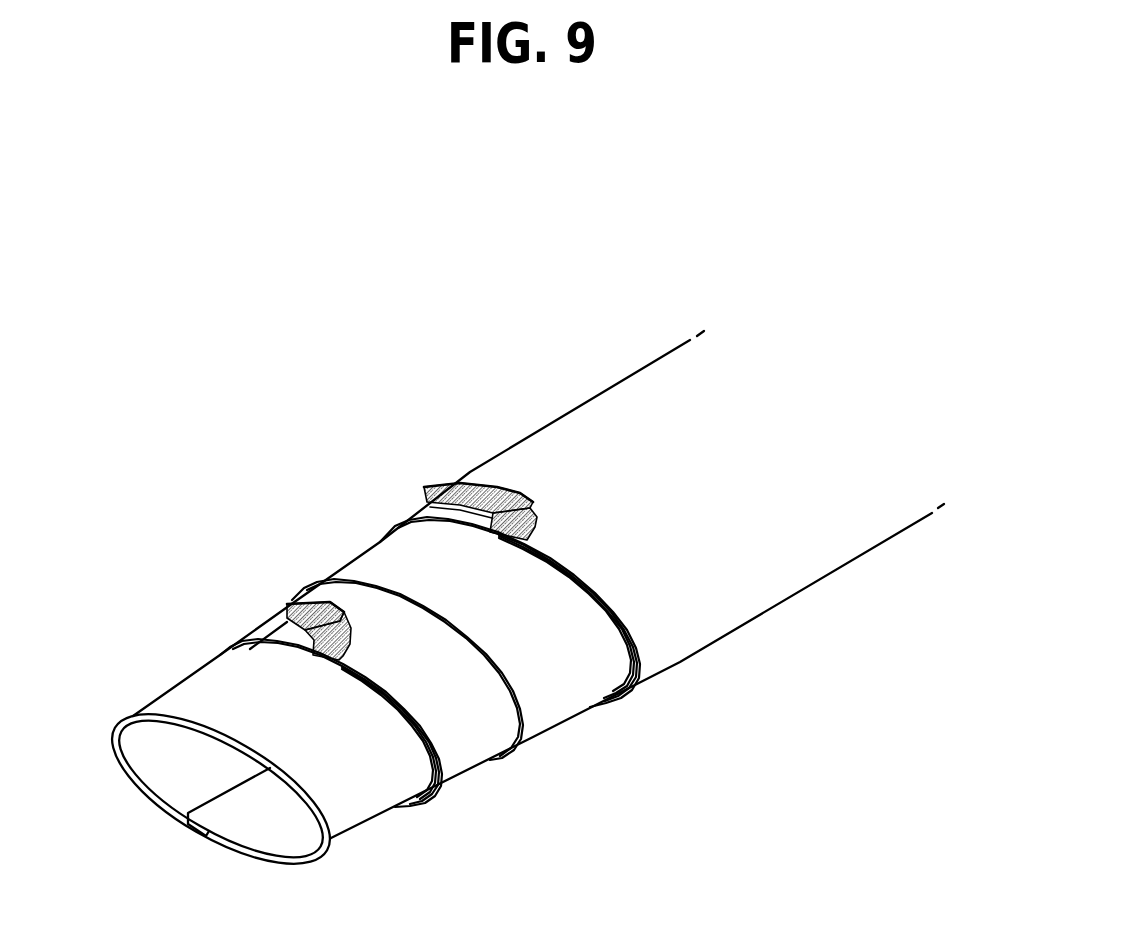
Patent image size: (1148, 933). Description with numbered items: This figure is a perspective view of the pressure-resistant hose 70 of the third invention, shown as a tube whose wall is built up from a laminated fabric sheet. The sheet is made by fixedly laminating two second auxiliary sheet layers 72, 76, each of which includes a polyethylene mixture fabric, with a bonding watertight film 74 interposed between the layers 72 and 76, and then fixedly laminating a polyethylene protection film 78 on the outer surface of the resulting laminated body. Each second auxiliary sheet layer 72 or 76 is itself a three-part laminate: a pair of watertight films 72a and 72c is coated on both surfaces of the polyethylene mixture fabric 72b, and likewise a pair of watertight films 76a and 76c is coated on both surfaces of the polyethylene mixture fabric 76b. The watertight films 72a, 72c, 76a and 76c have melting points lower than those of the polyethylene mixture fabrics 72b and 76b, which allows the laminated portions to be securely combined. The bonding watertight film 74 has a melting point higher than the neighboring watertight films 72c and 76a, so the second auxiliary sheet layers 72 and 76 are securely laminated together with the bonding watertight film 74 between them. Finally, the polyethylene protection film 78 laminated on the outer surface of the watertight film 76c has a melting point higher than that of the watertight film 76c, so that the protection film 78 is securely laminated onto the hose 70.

The pressure-resistant hose 70 is at (707, 674).
The second auxiliary sheet layer 72 is at (421, 457).
The watertight film 72a is at (523, 461).
The polyethylene mixture fabric 72b is at (480, 487).
The watertight film 72c is at (445, 518).
The bonding watertight film 74 is at (583, 693).
The second auxiliary sheet layer 76 is at (230, 584).
The watertight film 76a is at (337, 598).
The polyethylene mixture fabric 76b is at (290, 603).
The watertight film 76c is at (270, 635).
The polyethylene protection film 78 is at (382, 795).